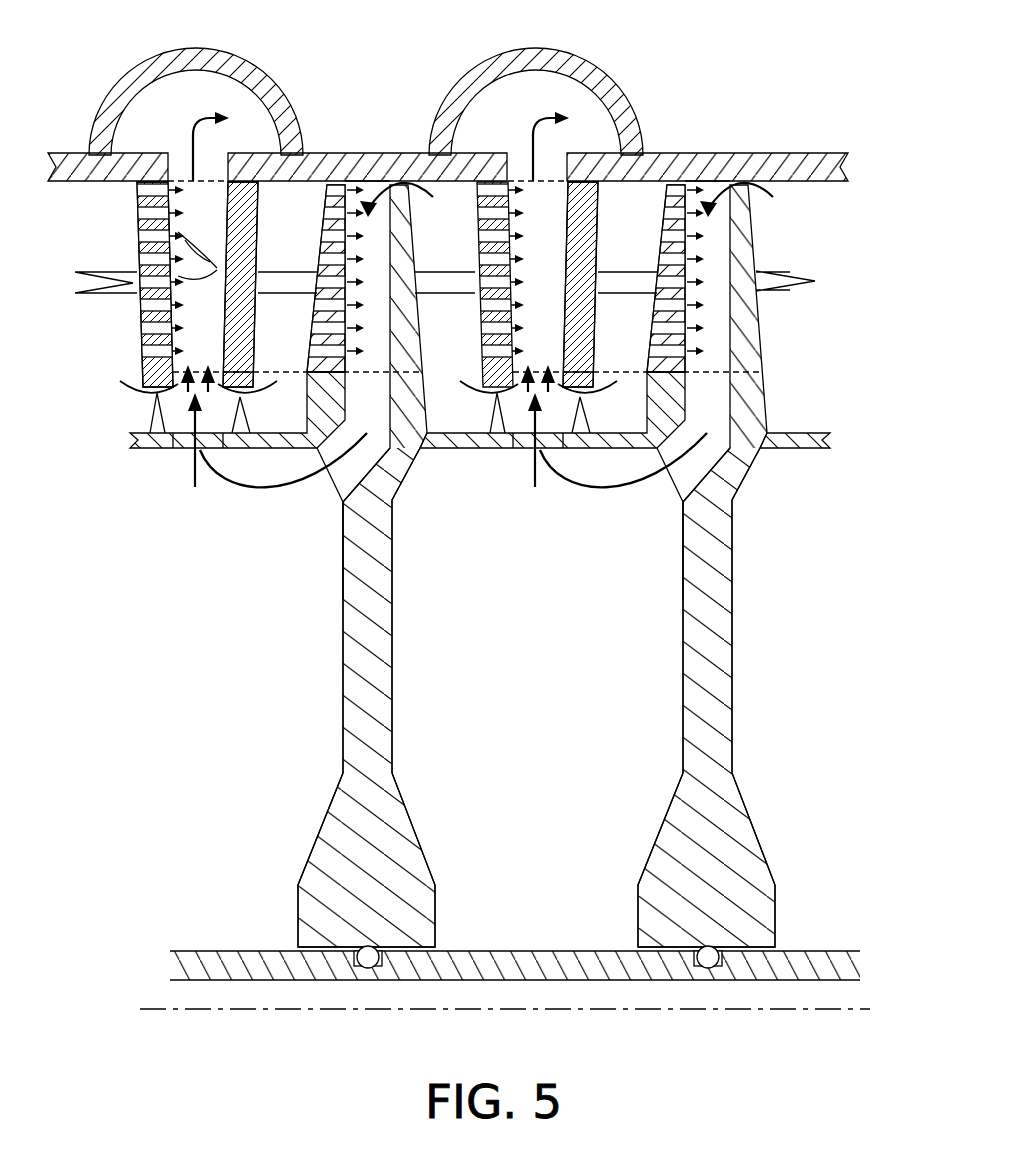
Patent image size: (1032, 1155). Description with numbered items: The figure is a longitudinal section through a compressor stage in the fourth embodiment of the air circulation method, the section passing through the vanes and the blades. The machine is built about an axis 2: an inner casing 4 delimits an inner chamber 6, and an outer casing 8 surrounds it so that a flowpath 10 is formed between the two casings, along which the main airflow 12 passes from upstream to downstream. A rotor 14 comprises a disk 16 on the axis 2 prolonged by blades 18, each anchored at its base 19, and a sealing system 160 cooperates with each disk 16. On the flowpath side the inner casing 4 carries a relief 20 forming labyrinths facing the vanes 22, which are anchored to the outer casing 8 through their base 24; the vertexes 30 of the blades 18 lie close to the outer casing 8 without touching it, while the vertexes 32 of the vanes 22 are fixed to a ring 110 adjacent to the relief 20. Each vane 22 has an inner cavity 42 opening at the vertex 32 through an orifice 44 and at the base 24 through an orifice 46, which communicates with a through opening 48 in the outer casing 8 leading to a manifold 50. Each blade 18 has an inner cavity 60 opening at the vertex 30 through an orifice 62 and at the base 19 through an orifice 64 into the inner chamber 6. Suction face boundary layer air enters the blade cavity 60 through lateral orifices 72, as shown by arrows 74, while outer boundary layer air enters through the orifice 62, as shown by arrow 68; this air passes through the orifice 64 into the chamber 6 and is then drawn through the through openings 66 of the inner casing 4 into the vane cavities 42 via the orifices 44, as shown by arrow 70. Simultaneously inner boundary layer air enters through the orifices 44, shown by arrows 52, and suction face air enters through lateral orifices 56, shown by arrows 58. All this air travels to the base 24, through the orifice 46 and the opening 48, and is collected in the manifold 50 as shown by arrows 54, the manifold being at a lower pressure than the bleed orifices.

The axis 2 is at (875, 1009).
The inner casing 4 is at (802, 448).
The inner chamber 6 is at (236, 606).
The outer casing 8 is at (808, 155).
The flowpath 10 is at (793, 376).
The main airflow 12 is at (782, 289).
The rotor 14 is at (405, 740).
The disk 16 is at (417, 840).
The blade 18 is at (412, 222).
The base of the blade 19 is at (395, 470).
The relief 20 is at (150, 432).
The vane 22 is at (254, 350).
The base of the vane 24 is at (258, 186).
The vertex of the blade 30 is at (332, 185).
The vertex of the vane 32 is at (143, 382).
The inner cavity of the vane 42 is at (226, 237).
The orifice 44 is at (183, 395).
The orifice 46 is at (210, 183).
The through opening 48 is at (232, 180).
The manifold 50 is at (237, 80).
The arrows 52 is at (118, 388).
The arrows 54 is at (190, 130).
The lateral through orifice 56 is at (137, 218).
The arrows 58 is at (211, 257).
The inner cavity of the blade 60 is at (409, 250).
The orifice 62 is at (359, 153).
The orifice 64 is at (342, 498).
The through openings 66 is at (364, 451).
The arrow 68 is at (430, 195).
The arrow 70 is at (258, 493).
The lateral through orifice 72 is at (310, 338).
The arrows 74 is at (375, 352).
The ring 110 is at (135, 360).
The sealing system 160 is at (187, 951).